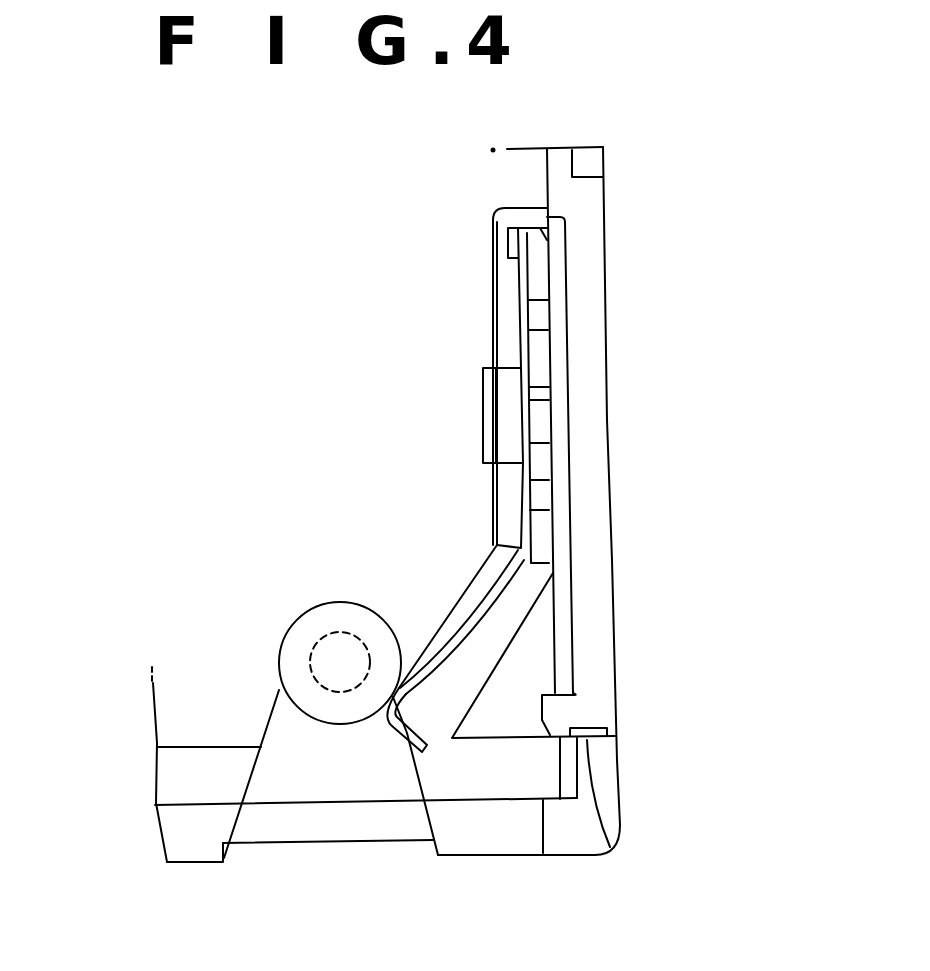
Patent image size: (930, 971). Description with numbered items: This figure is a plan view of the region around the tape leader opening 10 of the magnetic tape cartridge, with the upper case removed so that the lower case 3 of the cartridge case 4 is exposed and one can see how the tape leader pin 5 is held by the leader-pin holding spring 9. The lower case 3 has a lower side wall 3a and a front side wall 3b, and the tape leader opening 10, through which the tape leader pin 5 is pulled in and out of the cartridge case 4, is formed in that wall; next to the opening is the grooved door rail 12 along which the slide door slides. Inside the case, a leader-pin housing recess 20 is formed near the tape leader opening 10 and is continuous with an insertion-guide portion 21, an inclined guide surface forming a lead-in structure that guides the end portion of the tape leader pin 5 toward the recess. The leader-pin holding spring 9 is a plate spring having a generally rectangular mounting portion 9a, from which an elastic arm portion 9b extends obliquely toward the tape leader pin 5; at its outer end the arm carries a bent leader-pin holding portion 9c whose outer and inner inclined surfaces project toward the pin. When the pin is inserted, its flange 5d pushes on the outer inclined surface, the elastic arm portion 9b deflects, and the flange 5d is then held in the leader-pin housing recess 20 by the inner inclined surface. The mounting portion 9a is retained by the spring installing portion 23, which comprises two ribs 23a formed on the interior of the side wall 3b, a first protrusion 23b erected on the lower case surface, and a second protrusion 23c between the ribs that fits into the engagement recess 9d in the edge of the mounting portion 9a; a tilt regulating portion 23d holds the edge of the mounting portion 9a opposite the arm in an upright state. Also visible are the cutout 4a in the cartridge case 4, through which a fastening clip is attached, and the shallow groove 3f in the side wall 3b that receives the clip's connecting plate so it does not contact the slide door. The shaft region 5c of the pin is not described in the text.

The lower case 3 is at (603, 787).
The lower side wall 3a is at (163, 728).
The side wall of the lower case 3b is at (592, 238).
The groove 3f is at (608, 843).
The cartridge case 4 is at (614, 143).
The cutout 4a is at (610, 742).
The tape leader pin 5 is at (357, 593).
The roller shaft 5c is at (328, 635).
The flange 5d is at (312, 720).
The leader-pin holding spring 9 is at (538, 480).
The mounting portion 9a is at (523, 340).
The elastic arm portion 9b is at (490, 603).
The leader-pin holding portion 9c is at (390, 737).
The engagement recess 9d is at (528, 388).
The tape leader opening 10 is at (185, 820).
The door rail 12 is at (172, 783).
The leader-pin housing recess 20 is at (287, 613).
The insertion-guide portion 21 is at (298, 823).
The spring installing portion 23 is at (483, 385).
The rib 23a is at (542, 312).
The first protrusion 23b is at (492, 427).
The second protrusion 23c is at (542, 417).
The tilt regulating portion 23d is at (493, 222).